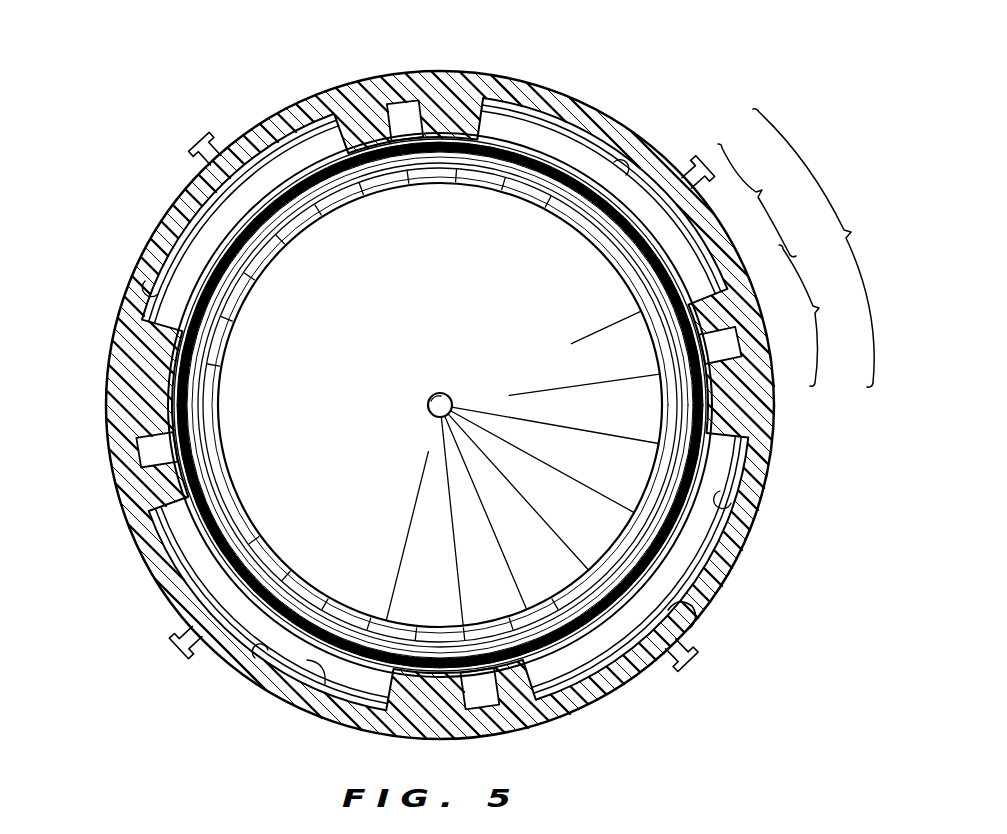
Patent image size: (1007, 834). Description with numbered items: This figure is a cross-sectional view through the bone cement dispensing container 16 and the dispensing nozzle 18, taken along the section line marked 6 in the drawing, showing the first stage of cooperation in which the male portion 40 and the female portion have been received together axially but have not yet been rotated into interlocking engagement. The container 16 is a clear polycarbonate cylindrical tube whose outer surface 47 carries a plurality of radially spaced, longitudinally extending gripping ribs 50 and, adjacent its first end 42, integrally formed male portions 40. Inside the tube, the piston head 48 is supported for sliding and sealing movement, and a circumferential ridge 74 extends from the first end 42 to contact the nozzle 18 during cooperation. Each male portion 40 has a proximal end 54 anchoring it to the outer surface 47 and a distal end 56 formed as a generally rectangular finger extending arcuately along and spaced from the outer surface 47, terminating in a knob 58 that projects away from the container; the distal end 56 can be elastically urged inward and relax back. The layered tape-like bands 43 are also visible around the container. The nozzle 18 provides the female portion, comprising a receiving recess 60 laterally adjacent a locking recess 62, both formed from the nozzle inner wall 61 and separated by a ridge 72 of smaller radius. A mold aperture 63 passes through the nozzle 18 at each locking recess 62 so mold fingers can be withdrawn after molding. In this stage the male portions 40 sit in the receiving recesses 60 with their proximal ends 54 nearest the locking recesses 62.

The section line 6- 6 is at (483, 15).
The dispensing container 16 is at (568, 165).
The dispensing nozzle 18 is at (166, 204).
The male portion 40 is at (821, 248).
The first end 42 is at (233, 332).
The tape layer 43 is at (337, 127).
The outer surface 47 is at (712, 547).
The piston head 48 is at (400, 307).
The gripping ribs 50 is at (660, 670).
The proximal end 54 is at (759, 200).
The distal end 56 is at (817, 315).
The knob 58 is at (381, 96).
The receiving recess 60 is at (323, 127).
The inner wall 61 is at (155, 360).
The locking recess 62 is at (622, 161).
The mold aperture 63 is at (186, 235).
The ridge 72 is at (693, 603).
The circumferential ridge 74 is at (203, 495).